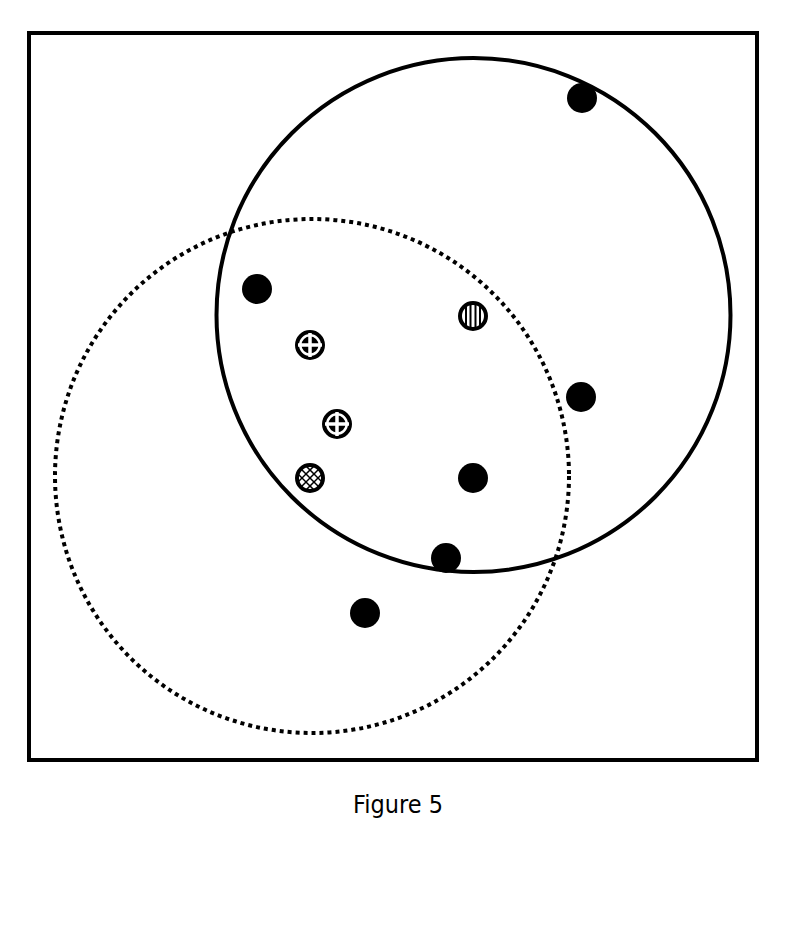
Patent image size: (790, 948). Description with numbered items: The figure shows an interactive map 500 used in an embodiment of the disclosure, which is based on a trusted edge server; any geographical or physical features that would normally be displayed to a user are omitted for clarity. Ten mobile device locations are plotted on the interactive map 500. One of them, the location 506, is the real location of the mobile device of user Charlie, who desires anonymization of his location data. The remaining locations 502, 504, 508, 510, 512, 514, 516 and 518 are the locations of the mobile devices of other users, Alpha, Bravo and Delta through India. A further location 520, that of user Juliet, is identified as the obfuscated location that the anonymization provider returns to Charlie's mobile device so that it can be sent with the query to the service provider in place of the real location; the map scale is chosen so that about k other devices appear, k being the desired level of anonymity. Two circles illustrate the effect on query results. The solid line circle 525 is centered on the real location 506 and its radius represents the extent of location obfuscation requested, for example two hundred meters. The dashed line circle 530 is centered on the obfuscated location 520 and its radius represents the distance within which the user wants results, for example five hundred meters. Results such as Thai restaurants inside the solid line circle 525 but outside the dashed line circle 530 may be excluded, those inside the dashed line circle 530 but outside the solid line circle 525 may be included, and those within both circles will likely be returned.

The interactive map 500 is at (96, 86).
The location 502 is at (553, 110).
The location 504 is at (228, 290).
The location 506 is at (445, 316).
The location 508 is at (281, 343).
The location 510 is at (551, 397).
The location 512 is at (308, 424).
The location 514 is at (445, 478).
The location 516 is at (418, 558).
The location 518 is at (335, 614).
The obfuscated location 520 is at (281, 478).
The solid line circle 525 is at (731, 330).
The dashed line circle 530 is at (295, 734).